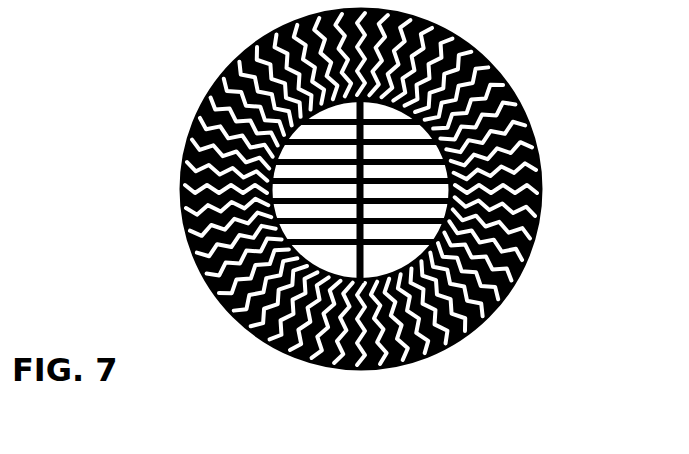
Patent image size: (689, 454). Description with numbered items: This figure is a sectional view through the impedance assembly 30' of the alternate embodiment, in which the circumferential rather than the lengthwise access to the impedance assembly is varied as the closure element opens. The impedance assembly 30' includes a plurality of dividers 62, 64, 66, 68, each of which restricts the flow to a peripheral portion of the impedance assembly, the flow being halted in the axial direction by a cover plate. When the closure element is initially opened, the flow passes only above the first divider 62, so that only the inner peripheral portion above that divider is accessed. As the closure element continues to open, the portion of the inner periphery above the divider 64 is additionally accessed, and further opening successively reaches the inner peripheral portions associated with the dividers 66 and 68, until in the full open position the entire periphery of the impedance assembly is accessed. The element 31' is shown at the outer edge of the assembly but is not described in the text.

The impedance assembly 30' is at (396, 189).
The zigzag winding layer 31' is at (357, 189).
The first divider 62 is at (262, 126).
The divider 64 is at (272, 150).
The divider 66 is at (270, 178).
The divider 68 is at (280, 210).